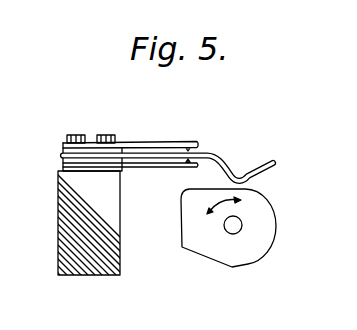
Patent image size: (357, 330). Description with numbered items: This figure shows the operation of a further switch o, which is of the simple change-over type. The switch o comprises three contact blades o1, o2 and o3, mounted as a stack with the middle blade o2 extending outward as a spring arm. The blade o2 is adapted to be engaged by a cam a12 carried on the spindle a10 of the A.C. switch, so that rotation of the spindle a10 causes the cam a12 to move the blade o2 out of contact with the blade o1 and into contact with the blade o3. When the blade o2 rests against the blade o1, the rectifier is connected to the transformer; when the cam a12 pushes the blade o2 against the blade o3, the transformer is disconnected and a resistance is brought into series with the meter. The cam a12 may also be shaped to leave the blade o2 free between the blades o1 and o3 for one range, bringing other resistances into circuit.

The switch o is at (63, 159).
The contact blade o1 is at (167, 167).
The contact blade o2 is at (258, 162).
The contact blade o3 is at (172, 143).
The spindle a10 is at (232, 230).
The cam a12 is at (194, 242).